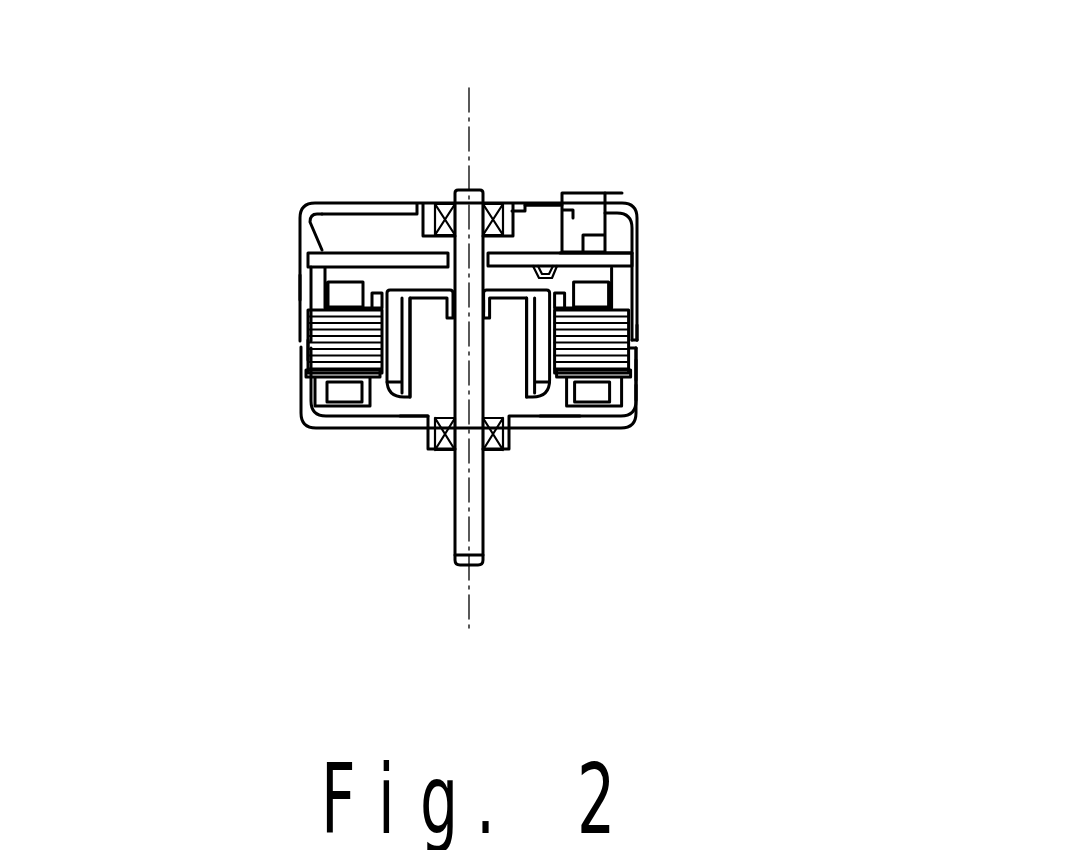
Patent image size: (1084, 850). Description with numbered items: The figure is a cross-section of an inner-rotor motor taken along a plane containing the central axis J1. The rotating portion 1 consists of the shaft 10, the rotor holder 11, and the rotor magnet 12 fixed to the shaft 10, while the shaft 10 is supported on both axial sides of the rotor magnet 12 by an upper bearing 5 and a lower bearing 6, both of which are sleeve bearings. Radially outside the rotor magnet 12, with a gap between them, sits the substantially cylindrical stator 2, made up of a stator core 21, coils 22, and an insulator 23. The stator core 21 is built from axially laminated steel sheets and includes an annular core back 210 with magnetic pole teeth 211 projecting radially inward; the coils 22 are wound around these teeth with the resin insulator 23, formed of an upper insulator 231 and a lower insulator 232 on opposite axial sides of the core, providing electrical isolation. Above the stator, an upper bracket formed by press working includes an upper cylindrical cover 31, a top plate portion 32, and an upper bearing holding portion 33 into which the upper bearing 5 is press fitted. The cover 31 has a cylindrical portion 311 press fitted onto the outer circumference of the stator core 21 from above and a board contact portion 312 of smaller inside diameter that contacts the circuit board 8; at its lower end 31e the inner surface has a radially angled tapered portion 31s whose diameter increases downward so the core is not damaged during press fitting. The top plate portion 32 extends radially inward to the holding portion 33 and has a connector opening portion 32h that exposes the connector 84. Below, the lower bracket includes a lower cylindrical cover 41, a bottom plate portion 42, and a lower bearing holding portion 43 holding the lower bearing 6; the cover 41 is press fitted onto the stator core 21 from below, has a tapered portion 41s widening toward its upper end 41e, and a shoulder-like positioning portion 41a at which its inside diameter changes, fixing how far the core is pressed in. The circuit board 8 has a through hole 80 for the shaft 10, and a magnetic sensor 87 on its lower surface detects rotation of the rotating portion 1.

The rotating portion 1 is at (421, 568).
The stator 2 is at (143, 243).
The upper bearing 5 is at (500, 202).
The lower bearing 6 is at (490, 450).
The circuit board 8 is at (597, 262).
The shaft 10 is at (462, 547).
The rotor holder 11 is at (428, 293).
The rotor magnet 12 is at (395, 310).
The stator core 21 is at (167, 486).
The coils 22 is at (585, 393).
The insulator 23 is at (125, 334).
The upper cylindrical cover 31 is at (640, 207).
The top plate portion 32 is at (532, 210).
The upper bearing holding portion 33 is at (525, 211).
The lower cylindrical cover 41 is at (637, 404).
The bottom plate portion 42 is at (557, 420).
The lower bearing holding portion 43 is at (427, 432).
The through hole 80 is at (483, 308).
The connector 84 is at (587, 227).
The magnetic sensor 87 is at (547, 265).
The core back 210 is at (318, 350).
The magnetic pole teeth 211 is at (377, 347).
The upper insulator 231 is at (318, 303).
The lower insulator 232 is at (313, 376).
The cylindrical portion 311 is at (300, 290).
The board contact portion 312 is at (308, 238).
The tapered portion 31s is at (639, 336).
The lower end 31e is at (637, 346).
The connector opening portion 32h is at (617, 197).
The upper end 41e is at (634, 353).
The tapered portion 41s is at (632, 370).
The positioning portion 41a is at (638, 388).
The central axis J1 is at (467, 98).